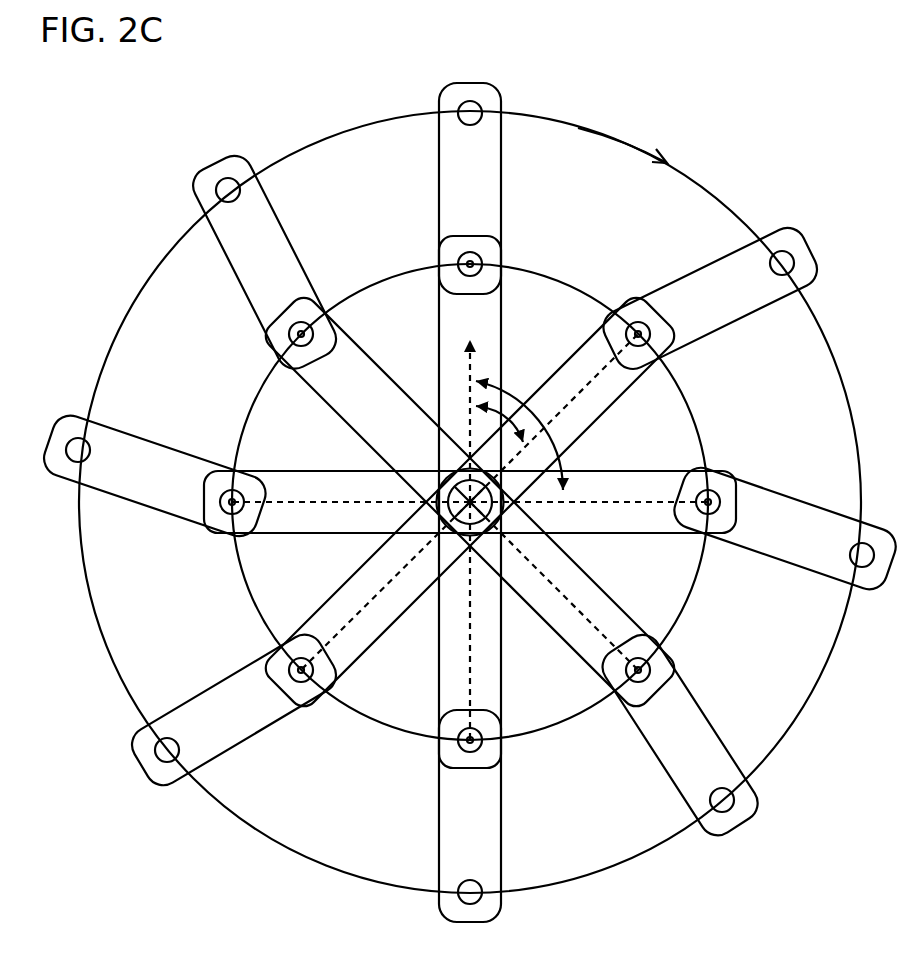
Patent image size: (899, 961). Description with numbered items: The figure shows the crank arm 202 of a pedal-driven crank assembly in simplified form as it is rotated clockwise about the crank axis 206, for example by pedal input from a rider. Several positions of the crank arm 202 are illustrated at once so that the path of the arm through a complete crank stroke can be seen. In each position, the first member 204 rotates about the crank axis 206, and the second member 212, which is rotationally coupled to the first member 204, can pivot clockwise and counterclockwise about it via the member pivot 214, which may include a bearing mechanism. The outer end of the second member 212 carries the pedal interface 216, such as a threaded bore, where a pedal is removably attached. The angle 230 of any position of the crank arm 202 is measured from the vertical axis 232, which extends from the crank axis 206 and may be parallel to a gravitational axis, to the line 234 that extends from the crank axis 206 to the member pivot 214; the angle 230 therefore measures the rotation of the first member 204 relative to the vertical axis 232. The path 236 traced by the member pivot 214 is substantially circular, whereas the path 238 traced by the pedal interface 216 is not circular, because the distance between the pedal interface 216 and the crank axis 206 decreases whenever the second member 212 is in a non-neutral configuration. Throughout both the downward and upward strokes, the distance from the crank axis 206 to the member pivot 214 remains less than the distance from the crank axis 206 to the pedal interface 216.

The crank arm 202 is at (546, 224).
The first member 204 is at (502, 321).
The crank axis 206 is at (447, 470).
The second member 212 is at (706, 268).
The member pivot 214 is at (297, 320).
The pedal interface 216 is at (479, 120).
The angle 230 is at (506, 402).
The vertical axis 232 is at (468, 363).
The line 234 is at (580, 393).
The path of member pivot 236 is at (397, 274).
The path of pedal interface 238 is at (359, 122).